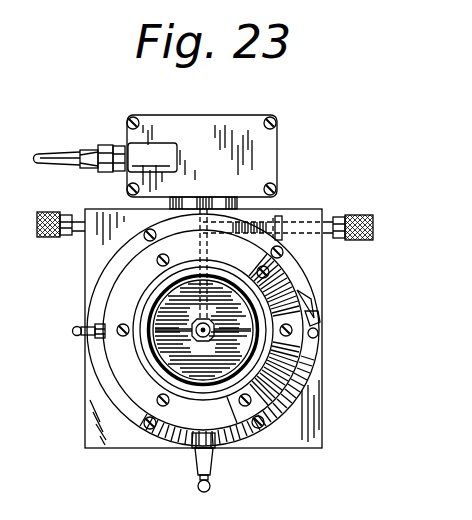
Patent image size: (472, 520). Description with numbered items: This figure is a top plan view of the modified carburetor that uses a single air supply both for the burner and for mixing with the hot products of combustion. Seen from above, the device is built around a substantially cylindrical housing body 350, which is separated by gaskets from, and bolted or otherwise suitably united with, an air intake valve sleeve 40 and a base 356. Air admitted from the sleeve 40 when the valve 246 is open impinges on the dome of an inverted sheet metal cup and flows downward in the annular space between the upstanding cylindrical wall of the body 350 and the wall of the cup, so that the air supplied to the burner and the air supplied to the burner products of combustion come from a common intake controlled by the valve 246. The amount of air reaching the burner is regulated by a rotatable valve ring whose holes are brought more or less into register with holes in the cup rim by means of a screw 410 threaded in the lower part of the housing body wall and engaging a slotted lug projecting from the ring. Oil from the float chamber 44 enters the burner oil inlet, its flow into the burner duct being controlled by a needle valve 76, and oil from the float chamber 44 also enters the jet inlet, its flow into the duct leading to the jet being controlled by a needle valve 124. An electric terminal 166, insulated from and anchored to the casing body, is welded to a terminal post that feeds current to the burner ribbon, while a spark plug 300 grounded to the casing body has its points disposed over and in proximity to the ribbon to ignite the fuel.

The float chamber 44 is at (284, 150).
The needle valve 124 is at (58, 240).
The needle valve 76 is at (360, 244).
The air intake valve sleeve 40 is at (121, 290).
The electric terminal 166 is at (75, 336).
The screw 410 is at (323, 320).
The valve 246 is at (214, 340).
The housing body 350 is at (306, 384).
The base 356 is at (130, 452).
The spark plug 300 is at (216, 466).